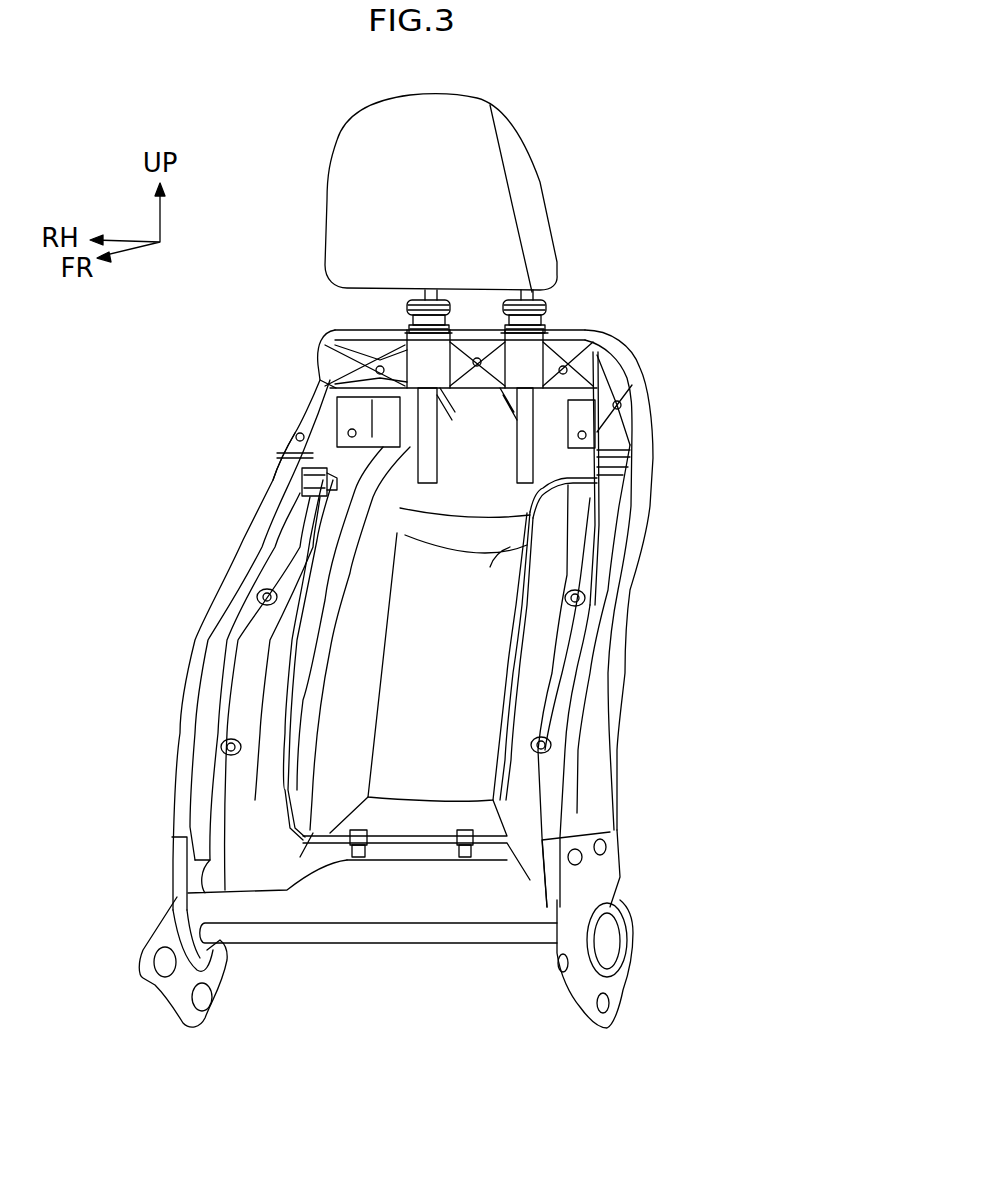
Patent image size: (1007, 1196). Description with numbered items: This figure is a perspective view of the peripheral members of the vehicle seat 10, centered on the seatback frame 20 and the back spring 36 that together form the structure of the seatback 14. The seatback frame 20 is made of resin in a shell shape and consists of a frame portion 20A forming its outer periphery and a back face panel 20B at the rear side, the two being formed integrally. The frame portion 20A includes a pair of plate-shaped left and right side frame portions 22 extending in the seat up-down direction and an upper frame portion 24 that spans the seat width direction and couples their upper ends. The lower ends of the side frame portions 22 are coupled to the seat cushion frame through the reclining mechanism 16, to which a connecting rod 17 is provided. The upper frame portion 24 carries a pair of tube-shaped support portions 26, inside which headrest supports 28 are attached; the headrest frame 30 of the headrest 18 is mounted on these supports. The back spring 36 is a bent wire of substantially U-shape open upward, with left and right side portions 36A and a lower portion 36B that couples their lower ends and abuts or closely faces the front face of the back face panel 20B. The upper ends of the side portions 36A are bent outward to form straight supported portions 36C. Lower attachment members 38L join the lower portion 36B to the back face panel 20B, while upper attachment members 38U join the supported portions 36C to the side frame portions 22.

The vehicle seat 10 is at (677, 210).
The seatback 14 is at (654, 348).
The reclining mechanism 16 is at (633, 906).
The connecting rod 17 is at (393, 947).
The headrest 18 is at (543, 185).
The seatback frame 20 is at (659, 404).
The frame portion 20A is at (203, 625).
The back face panel 20B is at (562, 562).
The side frame portions 22 is at (185, 685).
The upper frame portion 24 is at (483, 333).
The support portions 26 is at (377, 330).
The headrest supports 28 is at (398, 303).
The headrest frame 30 is at (427, 453).
The back spring 36 is at (307, 587).
The side portions 36A is at (310, 677).
The lower portion 36B is at (420, 835).
The supported portions 36C is at (338, 447).
The upper attachment members 38U is at (302, 480).
The lower attachment members 38L is at (352, 858).